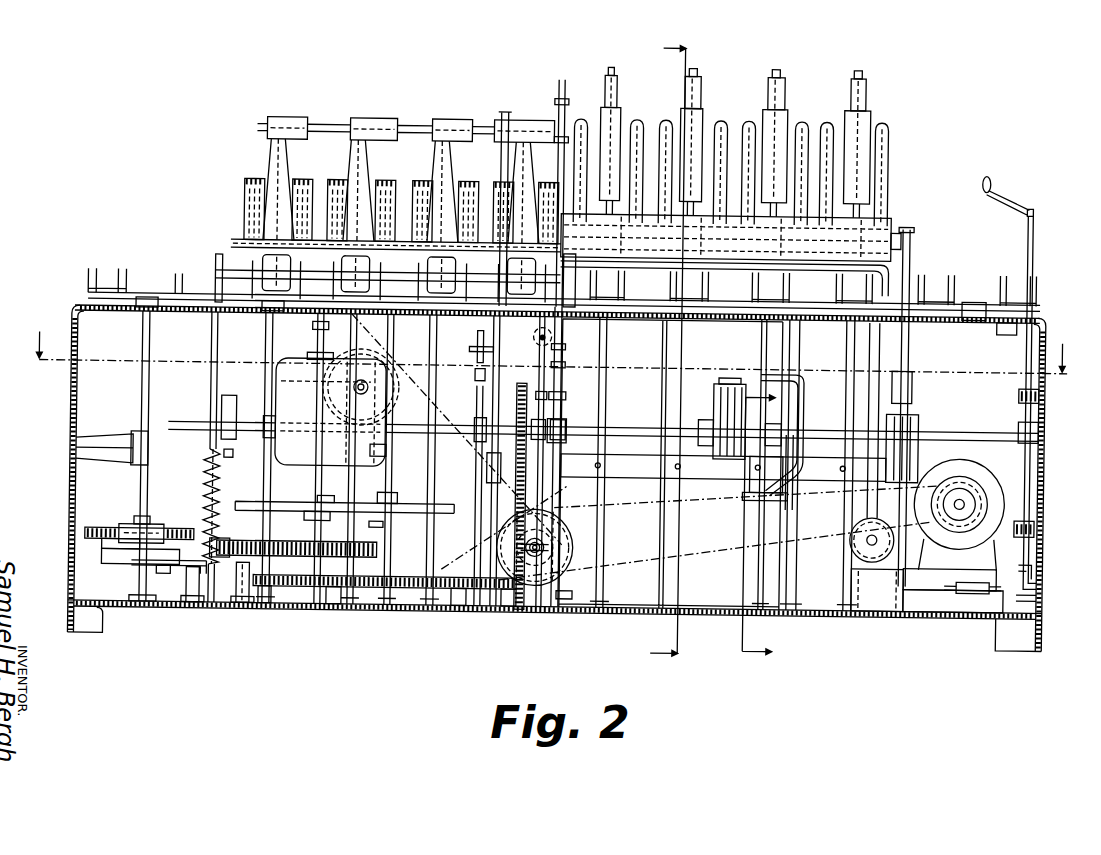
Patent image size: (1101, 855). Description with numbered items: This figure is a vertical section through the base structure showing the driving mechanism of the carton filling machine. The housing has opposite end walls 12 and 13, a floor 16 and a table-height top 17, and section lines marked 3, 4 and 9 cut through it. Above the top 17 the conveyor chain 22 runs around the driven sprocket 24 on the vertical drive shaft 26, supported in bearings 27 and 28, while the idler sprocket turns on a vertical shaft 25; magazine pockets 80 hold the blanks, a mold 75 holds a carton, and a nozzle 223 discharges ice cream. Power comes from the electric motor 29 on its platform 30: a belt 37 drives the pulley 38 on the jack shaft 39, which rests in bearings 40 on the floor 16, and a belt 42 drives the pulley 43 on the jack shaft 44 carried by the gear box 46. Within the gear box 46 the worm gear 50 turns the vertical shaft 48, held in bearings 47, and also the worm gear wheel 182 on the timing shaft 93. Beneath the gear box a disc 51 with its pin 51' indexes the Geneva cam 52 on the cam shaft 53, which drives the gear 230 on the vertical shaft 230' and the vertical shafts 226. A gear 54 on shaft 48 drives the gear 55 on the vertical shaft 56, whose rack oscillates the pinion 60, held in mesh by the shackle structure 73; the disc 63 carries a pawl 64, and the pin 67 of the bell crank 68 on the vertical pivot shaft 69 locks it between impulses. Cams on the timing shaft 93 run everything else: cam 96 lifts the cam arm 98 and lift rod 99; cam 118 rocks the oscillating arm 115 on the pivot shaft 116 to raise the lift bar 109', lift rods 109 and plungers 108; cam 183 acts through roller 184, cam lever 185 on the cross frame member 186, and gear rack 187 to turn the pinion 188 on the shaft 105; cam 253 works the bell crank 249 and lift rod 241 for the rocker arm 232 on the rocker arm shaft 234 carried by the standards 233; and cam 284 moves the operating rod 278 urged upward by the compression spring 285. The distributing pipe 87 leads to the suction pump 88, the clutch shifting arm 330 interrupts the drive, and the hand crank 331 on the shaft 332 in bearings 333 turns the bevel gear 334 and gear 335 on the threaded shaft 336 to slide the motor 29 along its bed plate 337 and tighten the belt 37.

The section line 3- 3 is at (552, 340).
The section line 4- 4 is at (657, 351).
The section line 9- 9 is at (770, 525).
The end wall 12 is at (1042, 480).
The end wall 13 is at (72, 406).
The floor 16 is at (603, 608).
The top 17 is at (78, 302).
The conveyor chain 22 is at (186, 300).
The driven sprocket 24 is at (131, 290).
The vertical shaft 25 is at (972, 311).
The vertical drive shaft 26 is at (152, 384).
The bearing 27 is at (113, 442).
The bearing 28 is at (146, 603).
The electric motor 29 is at (976, 472).
The platform 30 is at (1008, 607).
The belt 37 is at (619, 503).
The pulley 38 is at (577, 551).
The jack shaft 39 is at (550, 541).
The bearings 40 is at (577, 587).
The belt 42 is at (465, 495).
The pulley 43 is at (393, 366).
The jack shaft 44 is at (370, 388).
The gear box 46 is at (330, 412).
The bearings 47 is at (312, 357).
The vertical shaft 48 is at (325, 330).
The worm gear 50 is at (381, 347).
The disc 51 is at (345, 491).
The pin 51' is at (327, 486).
The Geneva cam 52 is at (397, 488).
The cam shaft 53 is at (386, 520).
The gear 54 is at (355, 538).
The gear 55 is at (247, 557).
The vertical shaft 56 is at (254, 601).
The pinion 60 is at (120, 527).
The disc 63 is at (118, 563).
The pawl 64 is at (105, 545).
The pin 67 is at (137, 566).
The bell crank 68 is at (165, 572).
The vertical pivot shaft 69 is at (196, 601).
The shackle structure 73 is at (150, 528).
The mold 75 is at (96, 280).
The pockets 80 is at (632, 128).
The distributing pipe 87 is at (806, 414).
The suction pump 88 is at (778, 492).
The power shaft 93 is at (192, 430).
The cam 96 is at (921, 410).
The cam arm 98 is at (914, 374).
The lift rod 99 is at (910, 342).
The shaft 105 is at (865, 236).
The plunger 108 is at (786, 100).
The lift rod 109 is at (745, 216).
The lift bar 109' is at (723, 480).
The oscillating arm 115 is at (477, 341).
The pivot shaft 116 is at (470, 350).
The cam 118 is at (735, 369).
The worm gear wheel 182 is at (388, 448).
The cam 183 is at (568, 420).
The roller 184 is at (567, 389).
The cam lever 185 is at (565, 359).
The cross frame member 186 is at (566, 341).
The gear rack 187 is at (577, 272).
The pinion 188 is at (554, 176).
The nozzle 223 is at (330, 120).
The vertical shafts 226 is at (269, 601).
The gear 230 is at (325, 612).
The vertical shaft 230' is at (428, 611).
The rocker arm 232 is at (292, 114).
The standards 233 is at (266, 162).
The rocker arm shaft 234 is at (501, 113).
The lift rod 241 is at (504, 527).
The bell crank 249 is at (478, 369).
The cam 253 is at (489, 462).
The operating rod 278 is at (220, 386).
The cam 284 is at (229, 440).
The compression spring 285 is at (218, 490).
The shifting arm 330 is at (537, 327).
The hand crank 331 is at (1004, 196).
The shaft 332 is at (1033, 256).
The bearings 333 is at (1040, 383).
The bevel gear 334 is at (1037, 562).
The gear 335 is at (1041, 585).
The threaded shaft 336 is at (965, 582).
The bed plate 337 is at (908, 601).